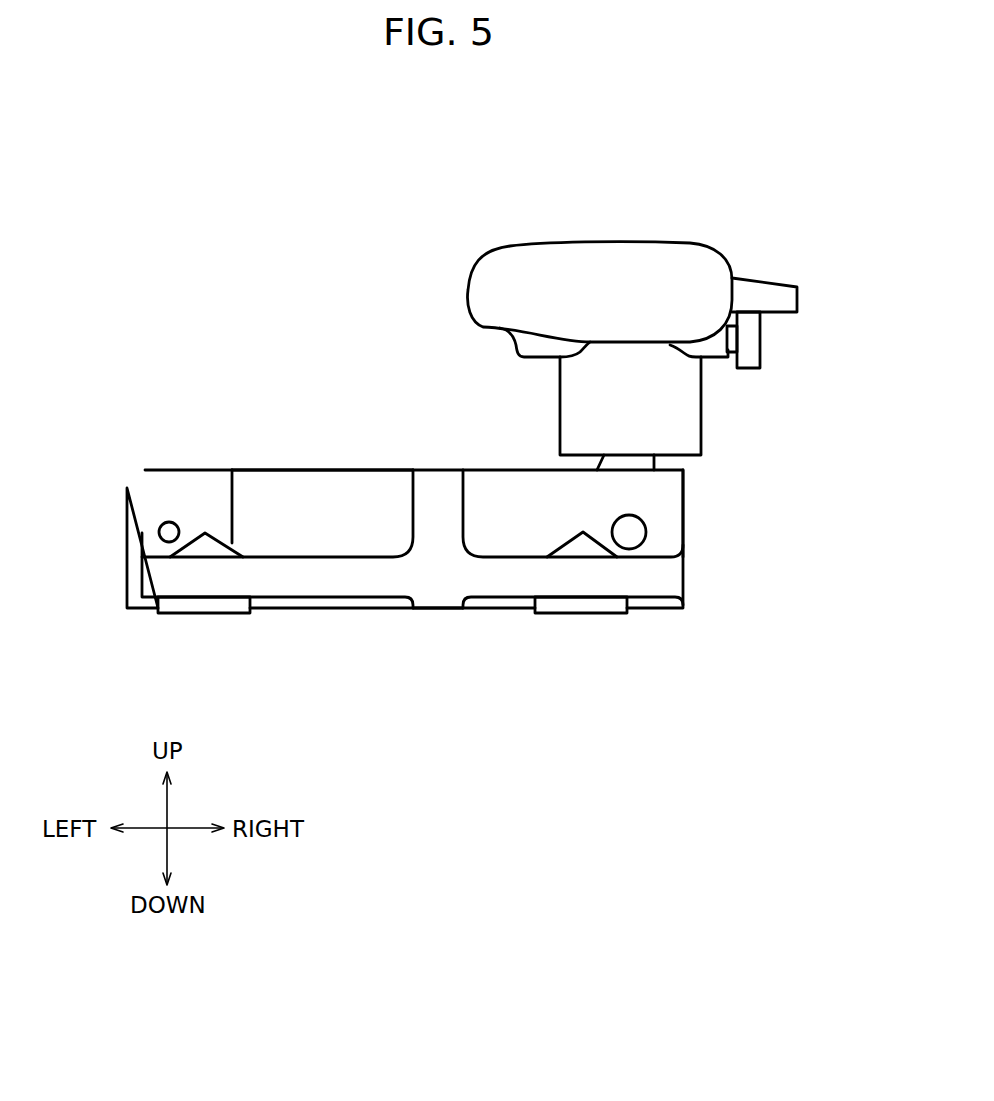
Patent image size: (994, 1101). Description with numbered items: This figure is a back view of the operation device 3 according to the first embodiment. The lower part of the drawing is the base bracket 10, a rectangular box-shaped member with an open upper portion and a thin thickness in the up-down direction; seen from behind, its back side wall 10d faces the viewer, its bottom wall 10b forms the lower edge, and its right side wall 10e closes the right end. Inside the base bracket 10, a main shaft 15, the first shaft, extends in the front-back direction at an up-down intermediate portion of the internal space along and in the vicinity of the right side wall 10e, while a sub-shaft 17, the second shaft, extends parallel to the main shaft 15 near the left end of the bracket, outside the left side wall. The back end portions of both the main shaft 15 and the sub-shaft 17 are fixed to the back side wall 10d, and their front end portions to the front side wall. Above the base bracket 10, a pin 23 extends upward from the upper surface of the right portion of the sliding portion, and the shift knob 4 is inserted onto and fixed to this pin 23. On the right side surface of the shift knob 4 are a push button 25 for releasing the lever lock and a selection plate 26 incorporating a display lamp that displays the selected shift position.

The operation device 3 is at (648, 291).
The shift knob 4 is at (553, 243).
The selection plate 26 is at (770, 278).
The push button 25 is at (760, 348).
The pin 23 is at (660, 462).
The base bracket 10 is at (432, 540).
The right side wall 10e is at (683, 498).
The back side wall 10d is at (335, 532).
The bottom wall 10b is at (487, 610).
The sub-shaft 17 is at (160, 530).
The main shaft 15 is at (629, 532).